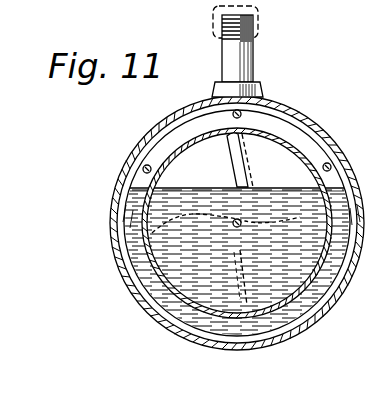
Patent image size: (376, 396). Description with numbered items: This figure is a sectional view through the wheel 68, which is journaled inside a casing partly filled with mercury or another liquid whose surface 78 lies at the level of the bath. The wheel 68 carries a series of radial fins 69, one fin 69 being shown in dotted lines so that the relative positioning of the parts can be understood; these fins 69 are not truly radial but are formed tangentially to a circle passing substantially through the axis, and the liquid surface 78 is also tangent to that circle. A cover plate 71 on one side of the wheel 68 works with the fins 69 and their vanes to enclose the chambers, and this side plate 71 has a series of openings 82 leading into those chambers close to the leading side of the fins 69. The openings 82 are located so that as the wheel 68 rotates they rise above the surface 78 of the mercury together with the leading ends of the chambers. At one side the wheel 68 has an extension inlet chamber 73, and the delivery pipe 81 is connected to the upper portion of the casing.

The wheel 68 is at (133, 170).
The radial fins 69 is at (247, 160).
The cover plate 71 is at (222, 160).
The extension inlet chamber 73 is at (190, 161).
The surface 78 is at (271, 172).
The delivery pipe 81 is at (251, 68).
The openings 82 is at (227, 160).